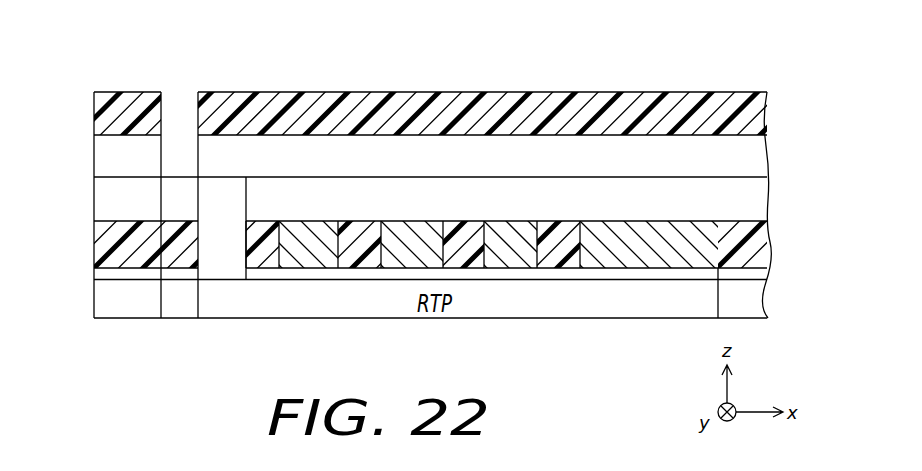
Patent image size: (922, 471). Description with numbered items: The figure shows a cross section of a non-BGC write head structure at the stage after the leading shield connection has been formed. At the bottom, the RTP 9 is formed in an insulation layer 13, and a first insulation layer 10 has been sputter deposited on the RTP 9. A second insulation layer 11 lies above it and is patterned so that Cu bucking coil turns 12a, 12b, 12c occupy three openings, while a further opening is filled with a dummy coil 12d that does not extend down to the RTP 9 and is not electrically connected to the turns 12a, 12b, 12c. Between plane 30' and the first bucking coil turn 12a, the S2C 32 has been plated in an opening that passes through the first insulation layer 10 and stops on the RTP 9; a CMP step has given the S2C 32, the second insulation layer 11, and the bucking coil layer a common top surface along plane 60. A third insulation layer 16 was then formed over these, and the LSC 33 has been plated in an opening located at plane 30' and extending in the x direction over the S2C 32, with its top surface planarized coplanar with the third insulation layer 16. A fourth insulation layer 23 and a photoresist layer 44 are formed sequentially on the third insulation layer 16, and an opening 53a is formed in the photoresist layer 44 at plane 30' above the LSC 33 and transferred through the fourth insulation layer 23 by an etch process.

The RTP 9 is at (662, 306).
The first insulation layer 10 is at (109, 273).
The second insulation layer 11 is at (109, 240).
The first bucking coil turn 12a is at (302, 262).
The bucking coil turn 12b is at (405, 262).
The bucking coil turn 12c is at (508, 262).
The dummy coil 12d is at (627, 262).
The insulation layer 13 is at (109, 300).
The third insulation layer 16 is at (109, 197).
The fourth insulation layer 23 is at (109, 155).
The plane 30'- 30' is at (165, 196).
The S2C 32 is at (225, 257).
The LSC 33 is at (180, 198).
The photoresist layer 44 is at (97, 115).
The opening 53a is at (187, 113).
The plane 60- 60 is at (832, 221).